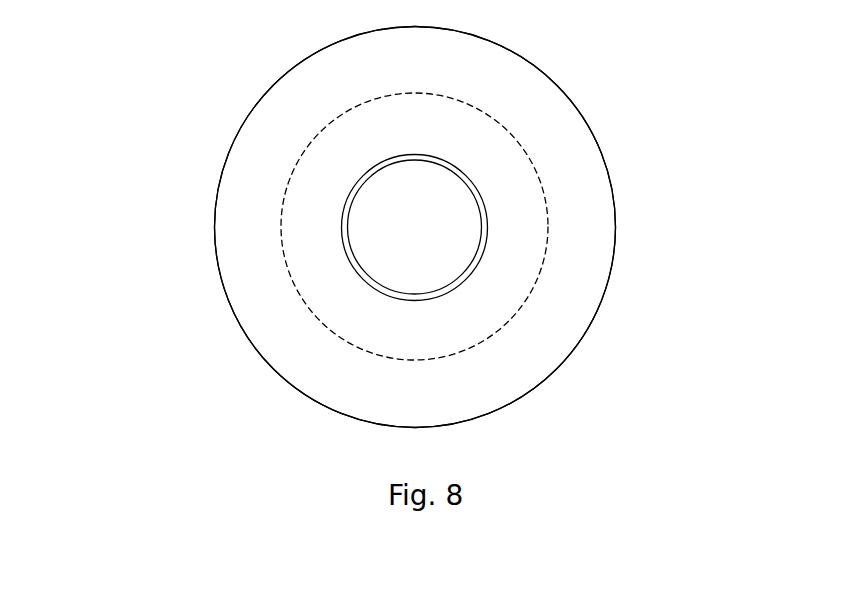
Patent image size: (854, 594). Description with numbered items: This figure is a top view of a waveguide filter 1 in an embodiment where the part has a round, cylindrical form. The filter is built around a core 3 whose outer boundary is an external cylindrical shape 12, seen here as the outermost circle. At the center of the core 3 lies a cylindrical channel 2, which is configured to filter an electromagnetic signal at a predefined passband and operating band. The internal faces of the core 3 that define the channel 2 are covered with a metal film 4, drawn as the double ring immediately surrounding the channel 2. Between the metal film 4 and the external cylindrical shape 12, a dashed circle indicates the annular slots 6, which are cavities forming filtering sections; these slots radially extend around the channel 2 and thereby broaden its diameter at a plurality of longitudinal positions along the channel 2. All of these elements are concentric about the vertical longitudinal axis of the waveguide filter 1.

The waveguide filter 1 is at (158, 423).
The channel 2 is at (423, 242).
The core 3 is at (587, 168).
The metal film 4 is at (460, 167).
The annular slots 6 is at (525, 242).
The external cylindrical shape 12 is at (587, 335).